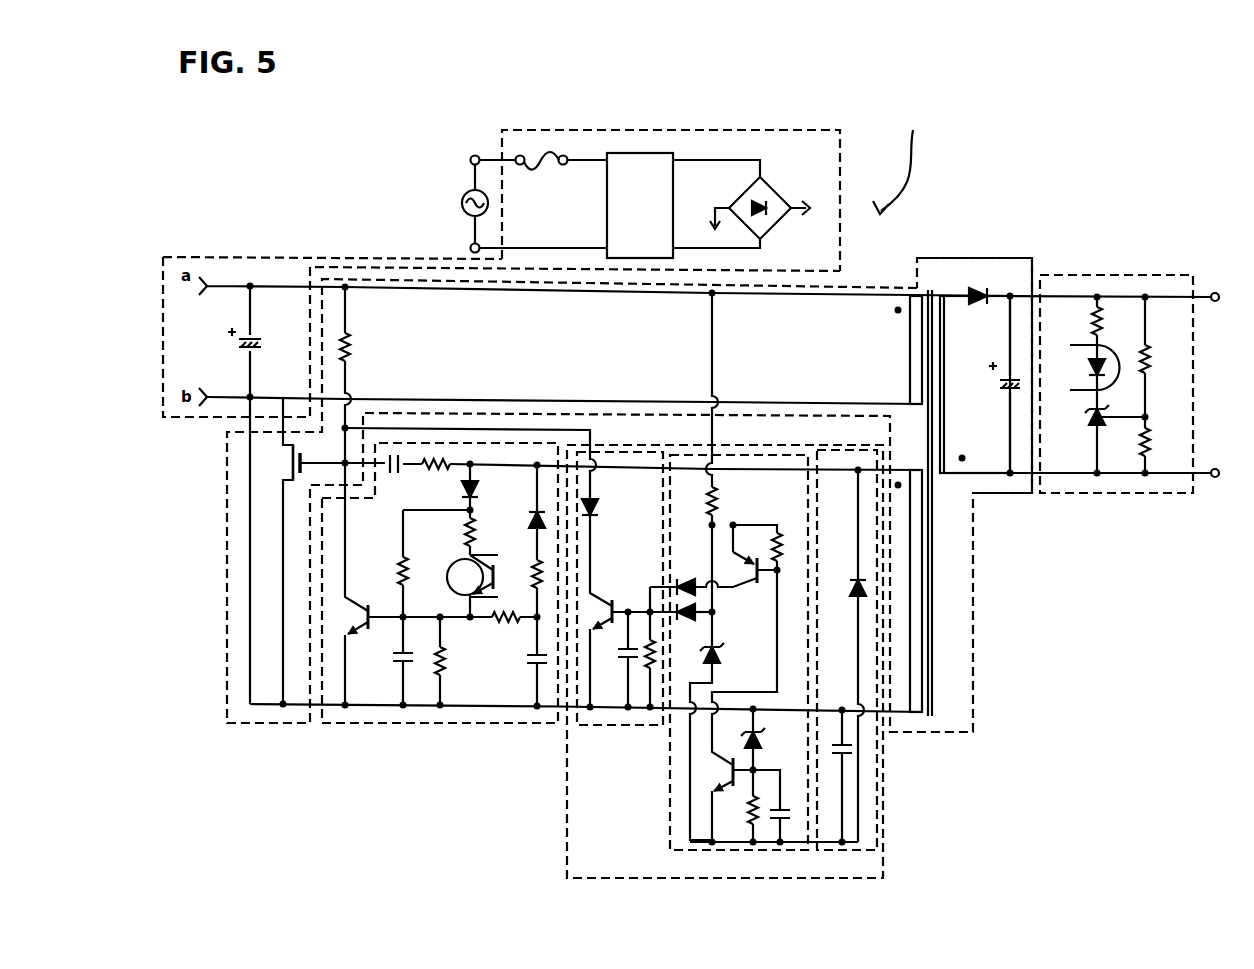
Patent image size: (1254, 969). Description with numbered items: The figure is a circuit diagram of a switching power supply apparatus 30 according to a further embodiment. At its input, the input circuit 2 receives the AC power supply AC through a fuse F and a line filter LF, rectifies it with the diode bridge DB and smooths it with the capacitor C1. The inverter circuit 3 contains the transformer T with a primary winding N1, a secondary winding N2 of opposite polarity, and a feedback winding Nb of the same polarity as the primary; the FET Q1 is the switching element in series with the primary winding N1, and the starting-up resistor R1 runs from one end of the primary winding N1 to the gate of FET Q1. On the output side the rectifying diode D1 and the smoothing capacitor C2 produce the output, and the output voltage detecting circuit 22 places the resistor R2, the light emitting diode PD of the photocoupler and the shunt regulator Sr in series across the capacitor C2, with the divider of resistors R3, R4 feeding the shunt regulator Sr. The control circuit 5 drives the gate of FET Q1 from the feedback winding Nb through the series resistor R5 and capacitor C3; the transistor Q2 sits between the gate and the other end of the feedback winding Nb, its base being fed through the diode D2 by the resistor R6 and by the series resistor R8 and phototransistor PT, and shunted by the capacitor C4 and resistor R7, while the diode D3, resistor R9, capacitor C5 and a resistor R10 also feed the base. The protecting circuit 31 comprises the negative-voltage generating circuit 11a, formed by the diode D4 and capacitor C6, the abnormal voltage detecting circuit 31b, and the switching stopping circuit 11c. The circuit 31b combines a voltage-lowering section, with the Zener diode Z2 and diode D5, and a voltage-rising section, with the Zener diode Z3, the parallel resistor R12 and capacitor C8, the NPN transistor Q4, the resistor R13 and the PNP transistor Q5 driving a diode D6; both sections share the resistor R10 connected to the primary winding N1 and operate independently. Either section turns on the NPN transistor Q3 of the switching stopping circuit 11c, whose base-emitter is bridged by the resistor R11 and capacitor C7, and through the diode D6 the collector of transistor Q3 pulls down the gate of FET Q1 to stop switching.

The input circuit 2 is at (695, 125).
The inverter circuit 3 is at (984, 253).
The control circuit 5 is at (423, 753).
The negative-voltage generating circuit 11a is at (863, 871).
The switching stopping circuit 11c is at (628, 749).
The output voltage detecting circuit 22 is at (1150, 273).
The switching power supply apparatus 30 is at (926, 125).
The protecting circuit 31 is at (733, 902).
The abnormal voltage detecting circuit 31b is at (772, 871).
The AC power supply AC is at (460, 204).
The fuse F is at (542, 169).
The line filter LF is at (640, 205).
The rectifying diode bridge DB is at (767, 194).
The smoothing capacitor C1 is at (258, 495).
The FET Q1 is at (301, 550).
The starting-up resistor R1 is at (358, 438).
The transistor Q2 is at (374, 645).
The capacitor C3 is at (393, 475).
The resistor R5 is at (436, 477).
The diode D2 is at (484, 491).
The resistor R8 is at (452, 536).
The resistor R6 is at (421, 563).
The phototransistor PT is at (464, 586).
The resistor R10 is at (618, 566).
The capacitor C4 is at (395, 661).
The resistor R7 is at (452, 661).
The diode D3 is at (521, 512).
The resistor R9 is at (523, 584).
The capacitor C5 is at (522, 661).
The diode D6 is at (638, 546).
The NPN transistor Q3 is at (628, 611).
The capacitor C7 is at (620, 659).
The resistor R11 is at (650, 640).
The diode D5 is at (691, 623).
The PNP transistor Q5 is at (755, 564).
The resistor R13 is at (756, 639).
The Zener diode Z2 is at (716, 741).
The NPN transistor Q4 is at (722, 800).
The Zener diode Z3 is at (742, 752).
The resistor R12 is at (736, 819).
The capacitor C8 is at (779, 806).
The capacitor C6 is at (836, 776).
The diode D4 is at (844, 656).
The transformer T is at (944, 495).
The primary winding N1 is at (900, 350).
The secondary winding N2 is at (975, 384).
The feedback winding Nb is at (926, 591).
The rectifying diode D1 is at (977, 282).
The smoothing capacitor C2 is at (998, 384).
The resistor R2 is at (1111, 328).
The light emitting diode PD is at (1087, 367).
The shunt regulator Sr is at (1102, 439).
The resistor R3 is at (1159, 362).
The resistor R4 is at (1159, 450).